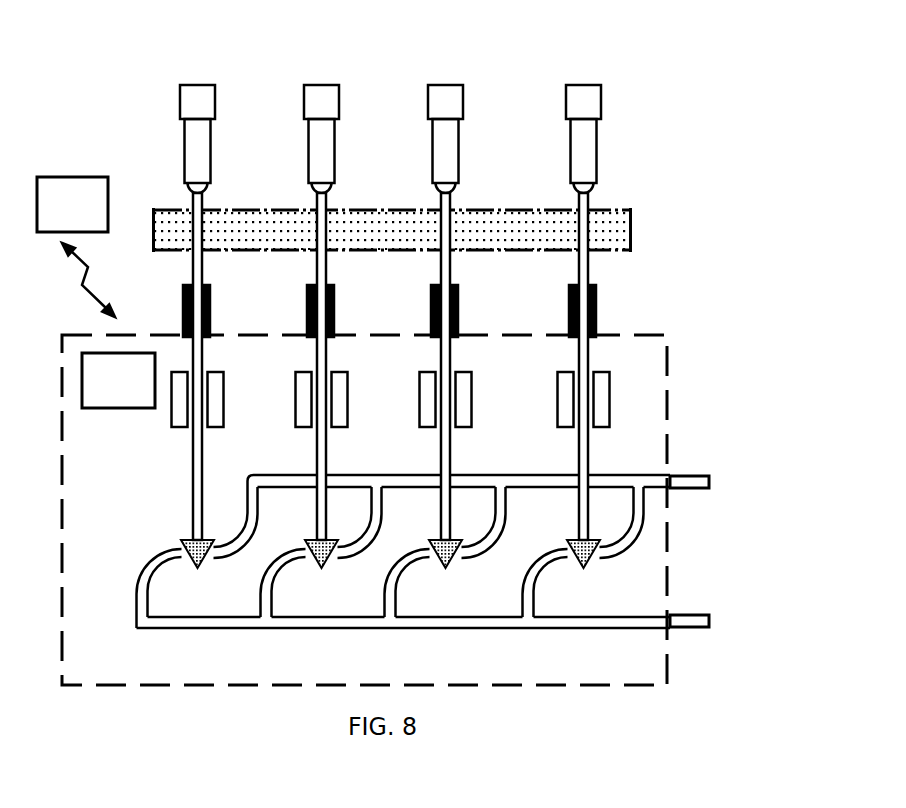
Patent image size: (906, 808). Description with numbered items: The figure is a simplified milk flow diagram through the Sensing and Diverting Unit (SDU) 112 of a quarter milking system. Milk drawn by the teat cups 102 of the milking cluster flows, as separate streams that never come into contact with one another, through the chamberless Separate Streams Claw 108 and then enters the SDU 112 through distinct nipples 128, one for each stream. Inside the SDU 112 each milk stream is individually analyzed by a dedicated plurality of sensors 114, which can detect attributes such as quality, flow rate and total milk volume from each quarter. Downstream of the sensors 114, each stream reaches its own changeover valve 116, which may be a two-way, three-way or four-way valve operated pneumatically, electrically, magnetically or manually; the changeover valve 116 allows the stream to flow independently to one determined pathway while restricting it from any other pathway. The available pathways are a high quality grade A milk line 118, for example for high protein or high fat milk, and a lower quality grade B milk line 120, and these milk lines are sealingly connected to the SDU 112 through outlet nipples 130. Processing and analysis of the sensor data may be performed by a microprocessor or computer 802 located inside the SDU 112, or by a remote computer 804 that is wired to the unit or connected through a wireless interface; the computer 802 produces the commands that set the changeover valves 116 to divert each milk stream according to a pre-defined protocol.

The teat cups 102 is at (210, 142).
The Separate Streams Claw 108 is at (631, 226).
The Sensing and Diverting Unit 112 is at (668, 362).
The sensors 114 is at (224, 403).
The changeover valve 116 is at (178, 546).
The grade A milk line 118 is at (638, 474).
The grade B milk line 120 is at (628, 615).
The nipples 128 is at (208, 305).
The outlet nipples 130 is at (690, 489).
The microprocessor or computer 802 is at (118, 380).
The remote computer 804 is at (72, 204).